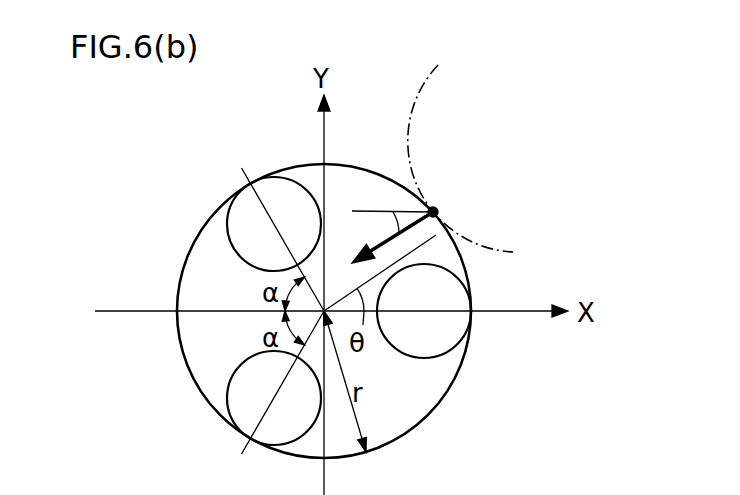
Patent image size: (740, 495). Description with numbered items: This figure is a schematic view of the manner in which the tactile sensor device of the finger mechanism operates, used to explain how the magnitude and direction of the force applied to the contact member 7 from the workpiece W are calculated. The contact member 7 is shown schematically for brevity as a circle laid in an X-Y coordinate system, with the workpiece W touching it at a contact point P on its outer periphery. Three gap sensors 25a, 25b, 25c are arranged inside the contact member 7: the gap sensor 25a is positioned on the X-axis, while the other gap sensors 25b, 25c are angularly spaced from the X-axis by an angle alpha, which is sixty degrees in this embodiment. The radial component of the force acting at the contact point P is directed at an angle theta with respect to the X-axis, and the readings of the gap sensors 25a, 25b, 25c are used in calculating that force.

The contact member 7 is at (467, 275).
The gap sensor 25a is at (438, 357).
The gap sensor 25b is at (228, 231).
The gap sensor 25c is at (232, 397).
The contact point P is at (437, 211).
The workpiece W is at (410, 108).